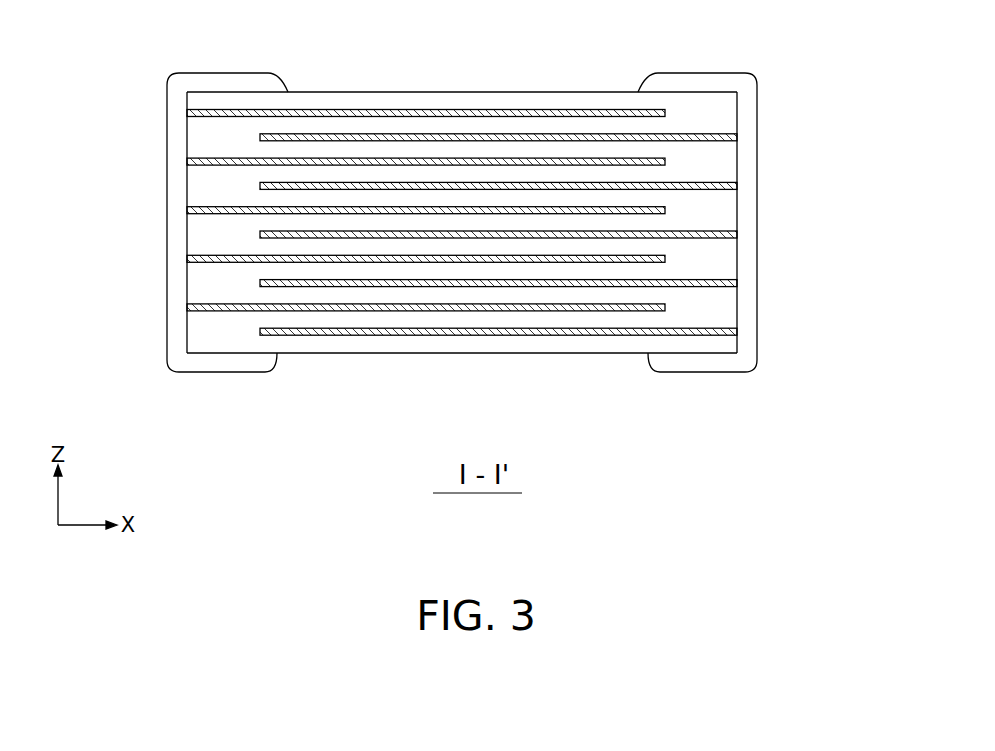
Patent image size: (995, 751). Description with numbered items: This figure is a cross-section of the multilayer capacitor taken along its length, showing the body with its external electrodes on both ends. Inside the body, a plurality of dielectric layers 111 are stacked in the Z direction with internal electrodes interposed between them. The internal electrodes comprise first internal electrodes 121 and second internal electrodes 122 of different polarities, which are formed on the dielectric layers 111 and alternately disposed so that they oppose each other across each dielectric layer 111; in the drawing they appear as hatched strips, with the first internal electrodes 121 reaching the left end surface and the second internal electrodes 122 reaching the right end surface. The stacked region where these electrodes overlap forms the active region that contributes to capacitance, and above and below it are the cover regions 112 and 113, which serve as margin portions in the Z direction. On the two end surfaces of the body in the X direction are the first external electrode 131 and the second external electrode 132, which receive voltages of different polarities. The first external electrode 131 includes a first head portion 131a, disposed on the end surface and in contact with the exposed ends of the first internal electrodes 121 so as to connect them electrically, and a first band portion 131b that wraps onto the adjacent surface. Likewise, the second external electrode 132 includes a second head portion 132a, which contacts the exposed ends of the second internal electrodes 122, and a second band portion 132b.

The dielectric layer 111 is at (718, 162).
The cover region 112 is at (468, 96).
The cover region 113 is at (495, 346).
The first internal electrode 121 is at (347, 109).
The second internal electrode 122 is at (583, 140).
The first external electrode 131 is at (144, 239).
The first head portion 131a is at (177, 243).
The first band portion 131b is at (175, 379).
The second external electrode 132 is at (783, 239).
The second head portion 132a is at (747, 240).
The second band portion 132b is at (751, 379).